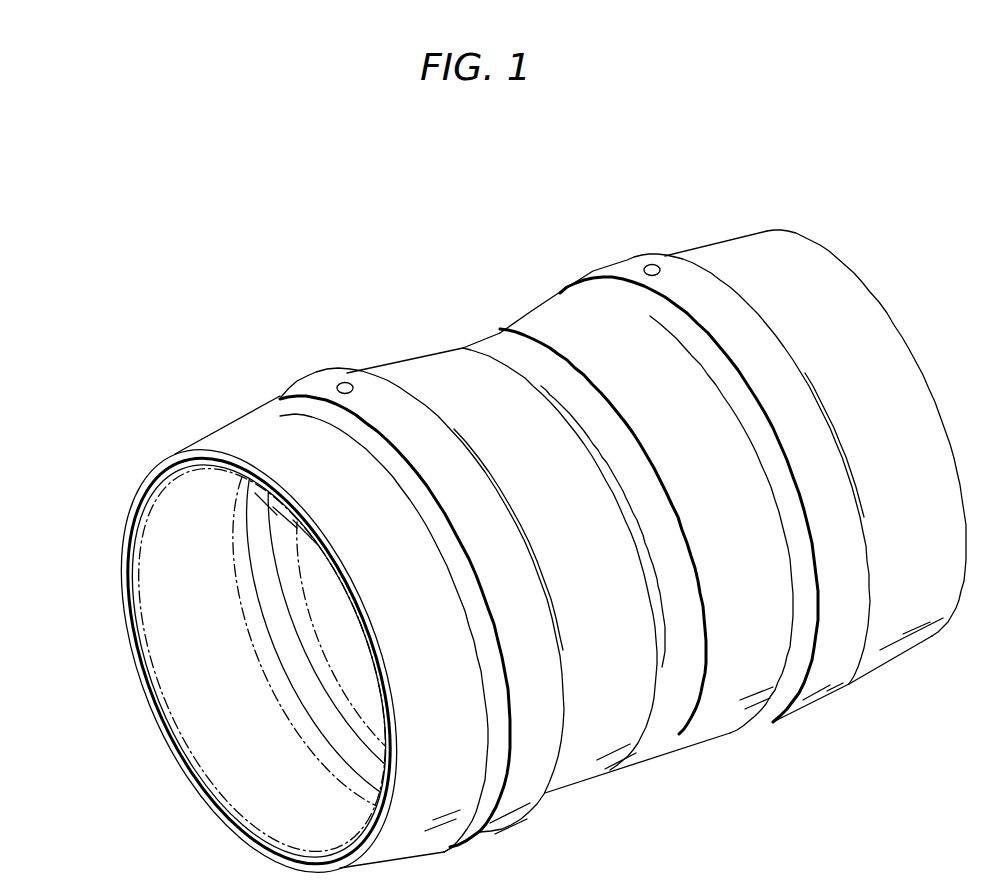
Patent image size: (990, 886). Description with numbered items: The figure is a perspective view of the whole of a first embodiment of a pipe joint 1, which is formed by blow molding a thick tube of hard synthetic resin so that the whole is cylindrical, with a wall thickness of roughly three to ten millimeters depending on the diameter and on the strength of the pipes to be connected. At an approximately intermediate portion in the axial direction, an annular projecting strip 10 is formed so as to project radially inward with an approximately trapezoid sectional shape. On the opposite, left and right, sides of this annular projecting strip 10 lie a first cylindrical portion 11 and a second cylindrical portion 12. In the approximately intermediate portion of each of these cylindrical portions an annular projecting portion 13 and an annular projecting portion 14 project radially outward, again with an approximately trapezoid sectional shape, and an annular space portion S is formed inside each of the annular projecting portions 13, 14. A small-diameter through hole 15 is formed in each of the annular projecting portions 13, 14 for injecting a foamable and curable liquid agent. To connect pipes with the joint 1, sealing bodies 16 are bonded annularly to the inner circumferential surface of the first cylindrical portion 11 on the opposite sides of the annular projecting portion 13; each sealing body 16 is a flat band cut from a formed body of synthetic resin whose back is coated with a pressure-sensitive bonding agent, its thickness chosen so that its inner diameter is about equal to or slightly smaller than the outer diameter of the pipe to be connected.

The pipe joint 1 is at (732, 208).
The annular projecting strip 10 is at (598, 447).
The first cylindrical portion 11 is at (270, 452).
The second cylindrical portion 12 is at (830, 332).
The annular projecting portion 13 is at (421, 430).
The annular projecting portion 14 is at (712, 310).
The small-diameter through hole 15 is at (340, 383).
The sealing body 16 is at (340, 636).
The annular space portion S is at (260, 608).